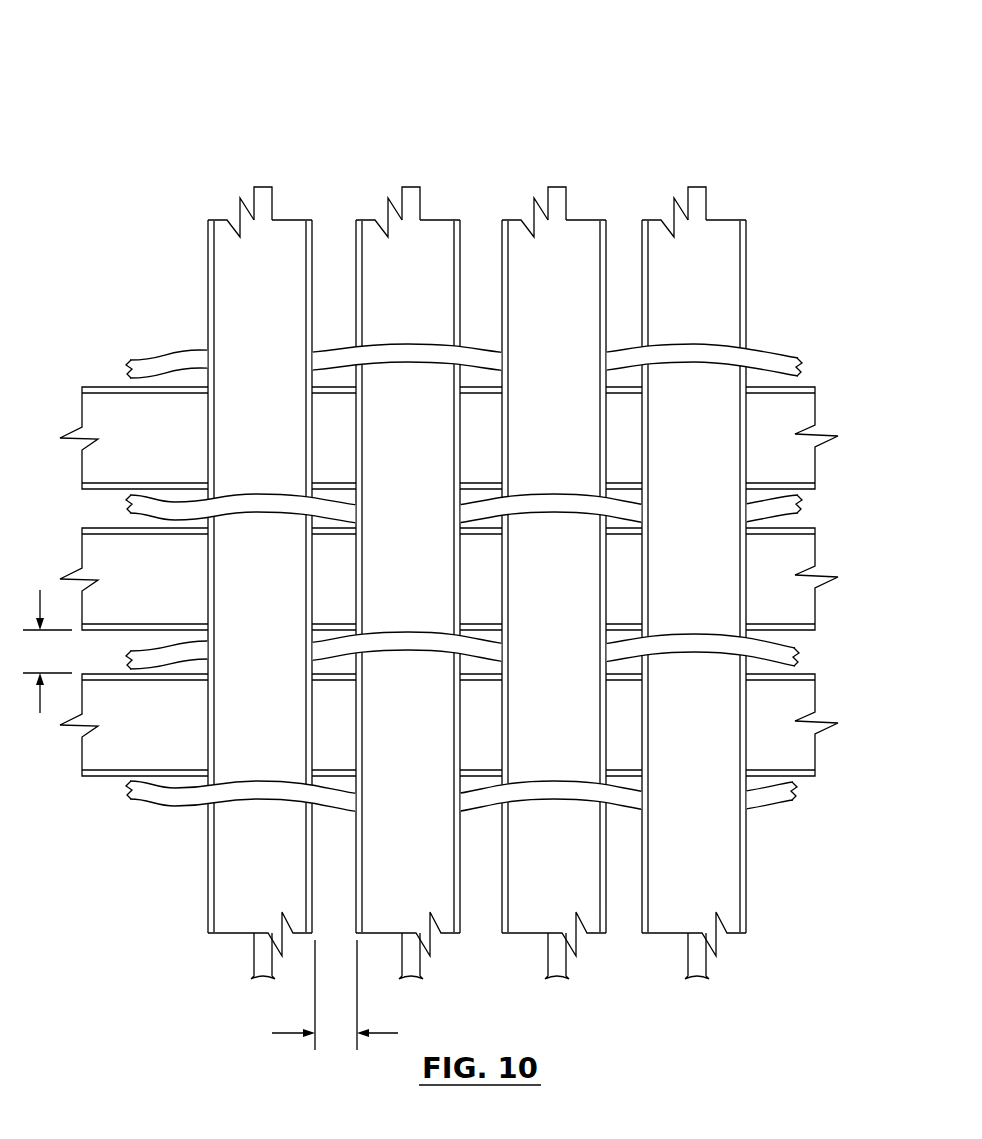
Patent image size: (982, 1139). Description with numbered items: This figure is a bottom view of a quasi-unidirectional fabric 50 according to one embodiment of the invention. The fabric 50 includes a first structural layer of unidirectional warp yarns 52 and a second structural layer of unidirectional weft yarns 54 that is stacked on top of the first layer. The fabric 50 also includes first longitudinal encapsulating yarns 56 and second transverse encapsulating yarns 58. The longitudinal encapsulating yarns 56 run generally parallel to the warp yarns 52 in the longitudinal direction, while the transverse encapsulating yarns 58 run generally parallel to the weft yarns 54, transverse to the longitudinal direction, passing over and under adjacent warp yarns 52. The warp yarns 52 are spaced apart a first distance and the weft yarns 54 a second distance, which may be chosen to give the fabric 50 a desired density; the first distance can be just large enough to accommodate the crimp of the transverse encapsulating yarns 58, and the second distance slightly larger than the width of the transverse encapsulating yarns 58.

The fabric 50 is at (461, 532).
The unidirectional warp yarns 52 is at (223, 252).
The unidirectional weft yarns 54 is at (797, 408).
The first longitudinal encapsulating yarns 56 is at (259, 197).
The second transverse encapsulating yarns 58 is at (773, 360).